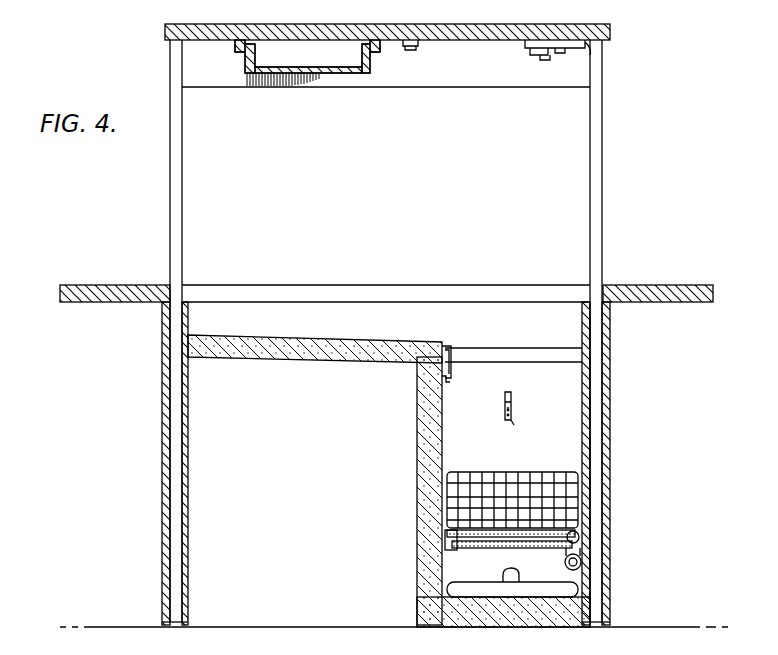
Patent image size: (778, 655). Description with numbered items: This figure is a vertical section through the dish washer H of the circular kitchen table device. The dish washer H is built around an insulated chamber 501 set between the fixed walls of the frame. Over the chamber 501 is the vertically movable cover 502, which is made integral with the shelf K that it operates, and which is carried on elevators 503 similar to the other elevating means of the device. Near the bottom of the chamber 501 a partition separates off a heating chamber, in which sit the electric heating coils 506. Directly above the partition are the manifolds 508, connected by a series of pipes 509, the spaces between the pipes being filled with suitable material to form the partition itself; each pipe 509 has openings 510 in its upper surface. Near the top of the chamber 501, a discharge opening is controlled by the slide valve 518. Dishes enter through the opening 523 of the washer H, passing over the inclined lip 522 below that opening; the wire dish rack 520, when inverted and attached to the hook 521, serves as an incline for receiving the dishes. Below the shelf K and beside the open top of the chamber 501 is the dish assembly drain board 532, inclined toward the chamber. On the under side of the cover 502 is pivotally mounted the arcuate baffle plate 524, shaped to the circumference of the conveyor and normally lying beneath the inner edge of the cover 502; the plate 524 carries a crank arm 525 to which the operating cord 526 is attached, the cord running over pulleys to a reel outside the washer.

The vertically movable cover 502 is at (606, 30).
The vertically movable shelf K is at (165, 31).
The arcuate baffle plate 524 is at (385, 75).
The operating cord 526 is at (476, 45).
The crank arm 525 is at (533, 52).
The opening of the washer 523 is at (386, 309).
The elevators 503 is at (170, 492).
The dish assembly drain board 532 is at (310, 362).
The insulated chamber 501 is at (455, 440).
The inclined lip 522 is at (570, 352).
The slide valve 518 is at (440, 379).
The hook 521 is at (511, 420).
The dish washer H is at (562, 416).
The wire dish rack 520 is at (450, 508).
The openings 510 is at (483, 545).
The pipes 509 is at (549, 540).
The manifolds 508 is at (445, 543).
The electric heating coils 506 is at (452, 588).